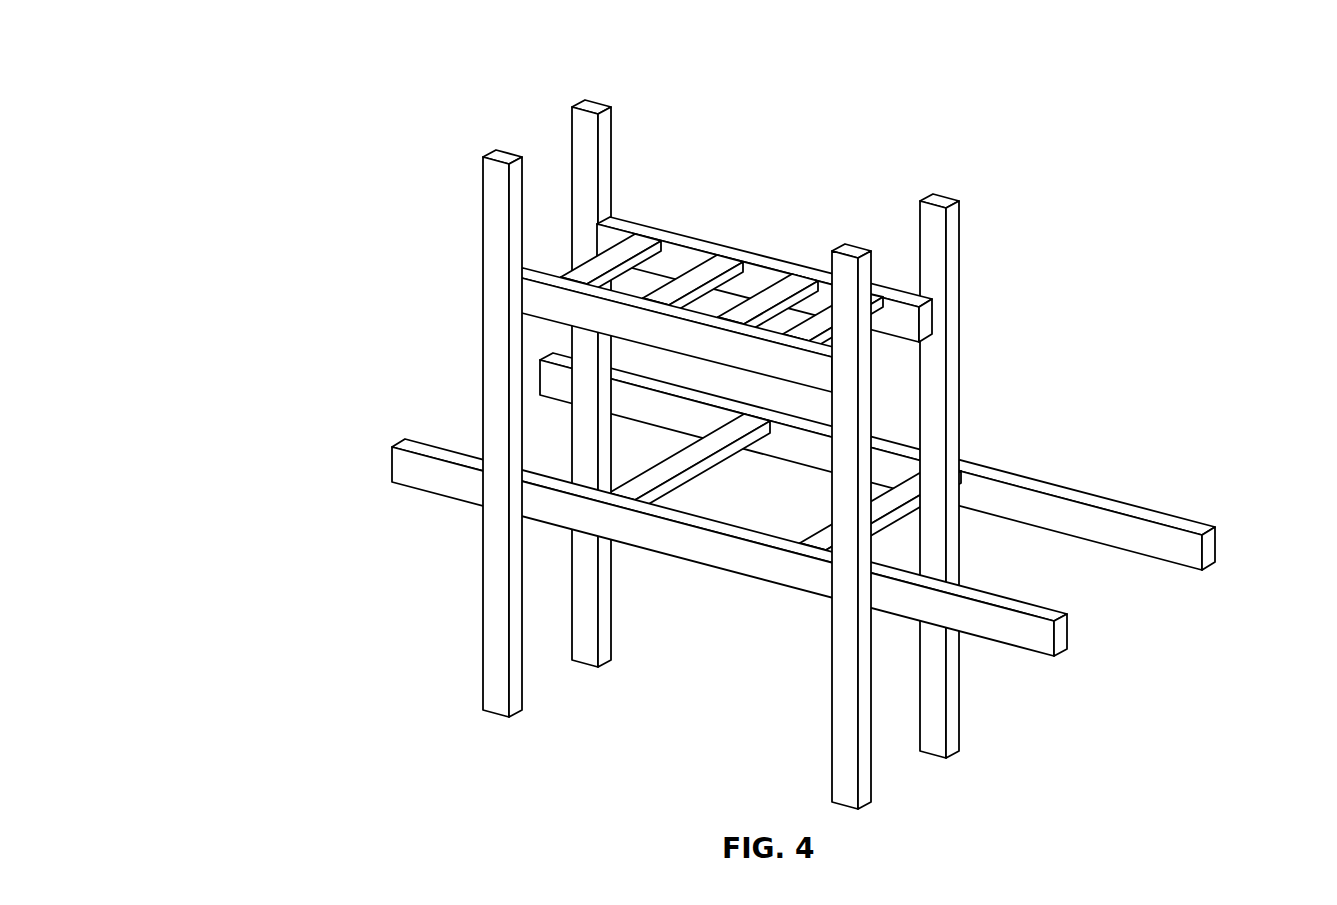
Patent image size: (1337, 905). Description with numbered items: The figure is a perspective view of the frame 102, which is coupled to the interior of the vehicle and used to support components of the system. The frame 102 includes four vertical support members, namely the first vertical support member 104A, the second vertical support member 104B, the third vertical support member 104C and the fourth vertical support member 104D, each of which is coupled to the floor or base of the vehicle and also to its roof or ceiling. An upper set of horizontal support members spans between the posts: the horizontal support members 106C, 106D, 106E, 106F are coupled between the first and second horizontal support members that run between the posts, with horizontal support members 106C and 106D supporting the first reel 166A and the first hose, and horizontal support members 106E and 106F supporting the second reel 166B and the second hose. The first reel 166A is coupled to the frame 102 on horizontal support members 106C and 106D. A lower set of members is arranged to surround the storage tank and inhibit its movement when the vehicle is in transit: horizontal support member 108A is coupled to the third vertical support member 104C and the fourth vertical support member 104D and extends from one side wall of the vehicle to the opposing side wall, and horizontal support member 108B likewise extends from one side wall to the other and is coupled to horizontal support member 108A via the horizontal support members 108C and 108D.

The frame 102 is at (753, 420).
The first vertical support member 104A is at (490, 155).
The second vertical support member 104B is at (838, 256).
The third vertical support member 104C is at (582, 116).
The fourth vertical support member 104D is at (928, 210).
The horizontal support member 106C is at (634, 241).
The horizontal support member 106D is at (705, 265).
The horizontal support member 106E is at (773, 285).
The horizontal support member 106F is at (825, 313).
The horizontal support member 108A is at (1066, 630).
The horizontal support member 108B is at (1212, 540).
The horizontal support member 108C is at (667, 495).
The horizontal support member 108D is at (800, 546).
The first reel 166A is at (525, 296).
The second reel 166B is at (603, 234).